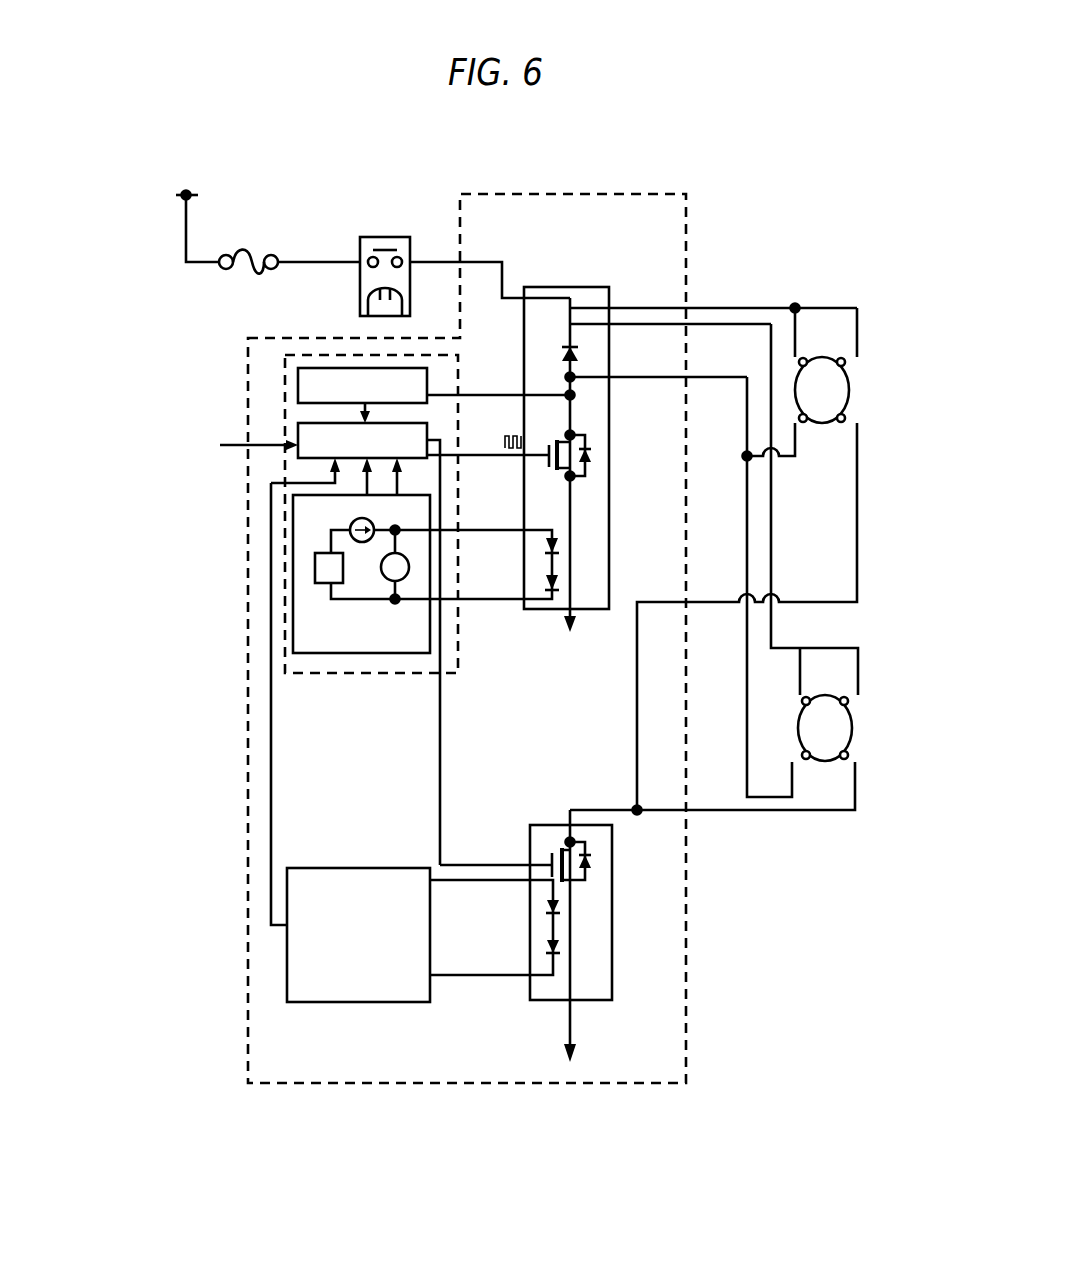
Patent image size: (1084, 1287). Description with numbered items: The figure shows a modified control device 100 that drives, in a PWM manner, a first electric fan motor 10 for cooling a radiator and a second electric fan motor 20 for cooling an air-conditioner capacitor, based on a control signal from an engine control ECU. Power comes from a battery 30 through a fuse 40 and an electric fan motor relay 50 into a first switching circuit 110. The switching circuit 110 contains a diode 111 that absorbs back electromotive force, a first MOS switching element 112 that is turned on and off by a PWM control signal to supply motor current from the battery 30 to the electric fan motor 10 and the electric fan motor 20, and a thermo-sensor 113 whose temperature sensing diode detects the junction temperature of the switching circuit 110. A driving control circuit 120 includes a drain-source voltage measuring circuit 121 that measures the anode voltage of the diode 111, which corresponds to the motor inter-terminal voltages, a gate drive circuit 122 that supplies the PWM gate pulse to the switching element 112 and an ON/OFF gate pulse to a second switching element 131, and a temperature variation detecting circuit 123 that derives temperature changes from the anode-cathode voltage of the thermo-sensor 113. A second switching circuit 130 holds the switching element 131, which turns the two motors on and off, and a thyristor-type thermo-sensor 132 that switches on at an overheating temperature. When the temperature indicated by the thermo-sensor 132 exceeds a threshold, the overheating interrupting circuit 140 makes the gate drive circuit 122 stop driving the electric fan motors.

The electric fan motor 10 is at (855, 375).
The electric fan motor 20 is at (858, 717).
The battery 30 is at (178, 207).
The fuse 40 is at (235, 278).
The electric fan motor relay 50 is at (372, 237).
The control device 100 is at (250, 808).
The switching circuit 110 is at (610, 293).
The diode 111 is at (577, 355).
The switching element 112 is at (590, 472).
The thermo-sensor 113 is at (558, 598).
The driving control circuit 120 is at (285, 543).
The drain-source voltage (Vds) measuring circuit 121 is at (298, 378).
The gate drive circuit 122 is at (298, 453).
The temperature variation detecting circuit 123 is at (293, 622).
The switching circuit 130 is at (613, 967).
The switching element 131 is at (598, 862).
The thermo-sensor 132 is at (542, 948).
The overheating interrupting circuit 140 is at (287, 980).